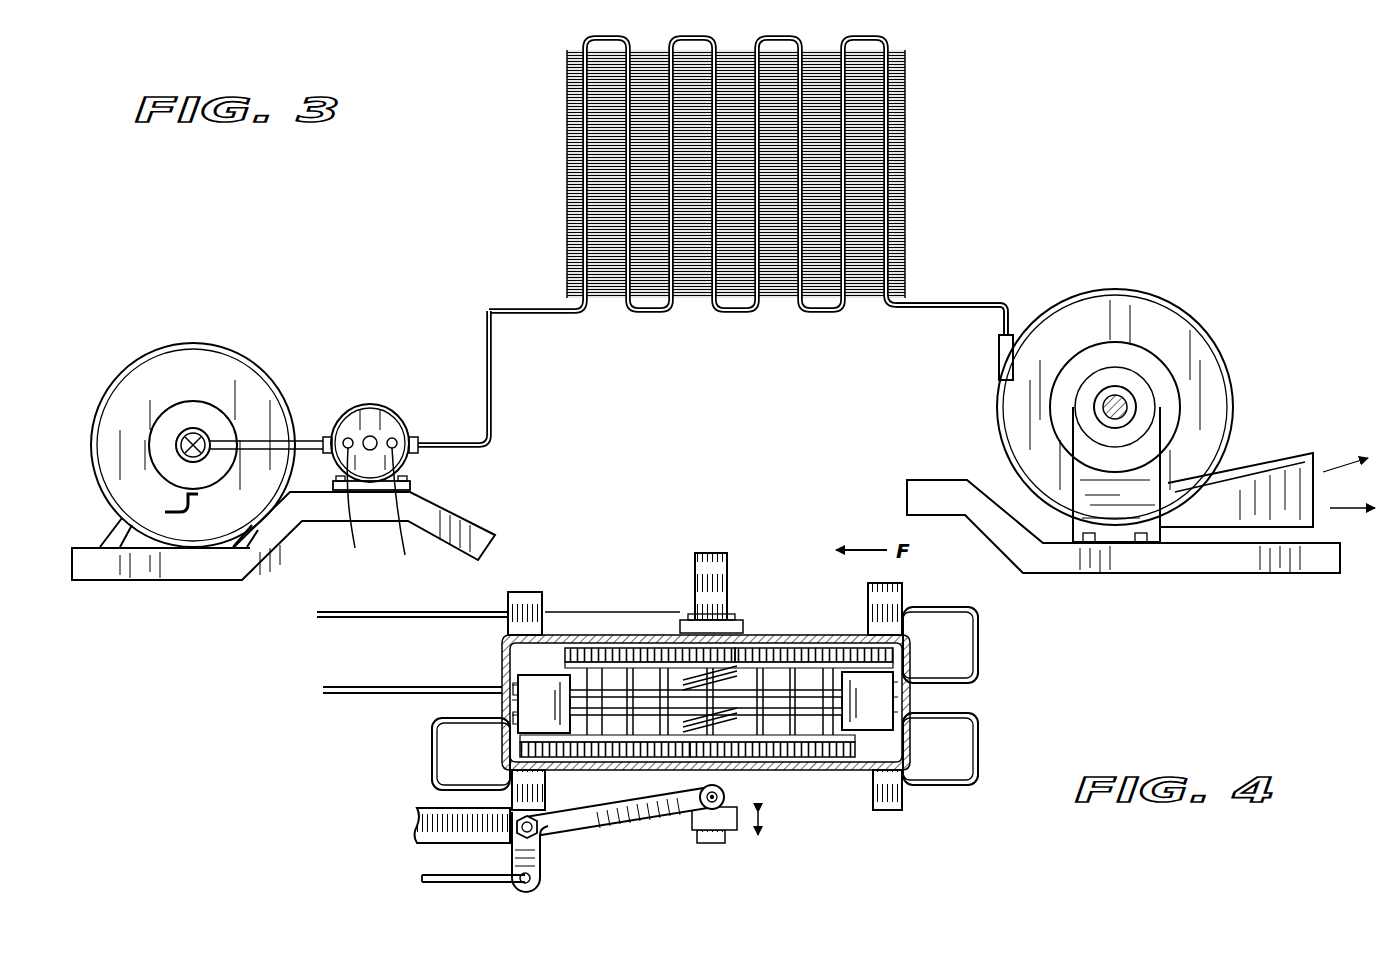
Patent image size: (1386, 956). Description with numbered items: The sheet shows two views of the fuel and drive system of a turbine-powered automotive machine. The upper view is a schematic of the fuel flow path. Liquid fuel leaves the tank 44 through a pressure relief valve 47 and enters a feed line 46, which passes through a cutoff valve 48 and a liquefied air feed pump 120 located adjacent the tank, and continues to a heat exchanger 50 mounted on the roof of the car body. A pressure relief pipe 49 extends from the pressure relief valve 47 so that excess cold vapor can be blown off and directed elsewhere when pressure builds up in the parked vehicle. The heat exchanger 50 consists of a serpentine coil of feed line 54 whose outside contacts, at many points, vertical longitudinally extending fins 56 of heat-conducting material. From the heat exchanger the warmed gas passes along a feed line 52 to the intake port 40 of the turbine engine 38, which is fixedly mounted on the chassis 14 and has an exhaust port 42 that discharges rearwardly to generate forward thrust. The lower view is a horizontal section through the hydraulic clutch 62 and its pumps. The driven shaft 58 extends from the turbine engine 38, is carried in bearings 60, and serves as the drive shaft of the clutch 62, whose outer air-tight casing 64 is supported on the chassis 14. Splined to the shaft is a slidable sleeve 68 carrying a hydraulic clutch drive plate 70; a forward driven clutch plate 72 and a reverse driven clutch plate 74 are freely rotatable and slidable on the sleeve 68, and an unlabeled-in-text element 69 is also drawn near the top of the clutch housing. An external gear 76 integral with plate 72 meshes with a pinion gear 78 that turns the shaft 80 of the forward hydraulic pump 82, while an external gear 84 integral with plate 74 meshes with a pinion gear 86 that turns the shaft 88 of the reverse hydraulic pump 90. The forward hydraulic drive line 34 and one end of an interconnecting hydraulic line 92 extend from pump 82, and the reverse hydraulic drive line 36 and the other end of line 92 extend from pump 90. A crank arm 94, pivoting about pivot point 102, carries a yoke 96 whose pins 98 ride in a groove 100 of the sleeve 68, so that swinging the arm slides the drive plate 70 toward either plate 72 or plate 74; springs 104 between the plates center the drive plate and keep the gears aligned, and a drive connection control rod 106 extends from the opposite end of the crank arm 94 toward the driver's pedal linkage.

In FIG. 3, the chassis 14 is at (450, 510).
In FIG. 4, the chassis 14 is at (885, 605).
In FIG. 4, the forward hydraulic drive line 34 is at (410, 617).
In FIG. 4, the reverse hydraulic drive line 36 is at (330, 690).
In FIG. 3, the turbine engine 38 is at (1135, 391).
In FIG. 3, the intake port 40 is at (999, 352).
In FIG. 3, the exhaust port 42 is at (1282, 462).
In FIG. 3, the tank 44 is at (191, 463).
In FIG. 3, the feed line 46 is at (492, 395).
In FIG. 3, the pressure relief valve 47 is at (195, 425).
In FIG. 3, the cutoff valve 48 is at (188, 435).
In FIG. 3, the pressure relief pipe 49 is at (183, 514).
In FIG. 3, the heat exchanger 50 is at (743, 174).
In FIG. 3, the feed line 52 is at (960, 305).
In FIG. 3, the serpentine coil of feed line 54 is at (773, 38).
In FIG. 3, the fins 56 is at (567, 205).
In FIG. 3, the driven shaft 58 is at (1122, 403).
In FIG. 4, the driven shaft 58 is at (700, 575).
In FIG. 3, the bearings 60 is at (1142, 420).
In FIG. 4, the hydraulic clutch 62 is at (775, 637).
In FIG. 3, the outer air-tight casing 64 is at (1090, 360).
In FIG. 4, the slidable sleeve 68 is at (738, 622).
In FIG. 4, the guide rod 69 is at (578, 612).
In FIG. 4, the hydraulic clutch drive plate 70 is at (817, 706).
In FIG. 4, the forward driven clutch plate 72 is at (610, 655).
In FIG. 4, the reverse driven clutch plate 74 is at (813, 716).
In FIG. 4, the external gear 76 is at (810, 650).
In FIG. 4, the pinion gear 78 is at (890, 653).
In FIG. 4, the shaft 80 is at (915, 668).
In FIG. 4, the forward hydraulic pump 82 is at (886, 700).
In FIG. 4, the external gear 84 is at (856, 752).
In FIG. 4, the pinion gear 86 is at (522, 750).
In FIG. 4, the shaft 88 is at (518, 740).
In FIG. 4, the reverse hydraulic pump 90 is at (516, 705).
In FIG. 4, the interconnecting hydraulic line 92 is at (432, 765).
In FIG. 4, the crank arm 94 is at (567, 825).
In FIG. 4, the yoke 96 is at (665, 810).
In FIG. 4, the pins 98 is at (764, 828).
In FIG. 4, the groove 100 is at (726, 800).
In FIG. 4, the pivot point 102 is at (432, 820).
In FIG. 4, the springs 104 is at (690, 680).
In FIG. 4, the drive connection control rod 106 is at (425, 875).
In FIG. 3, the liquefied air feed pump 120 is at (392, 408).